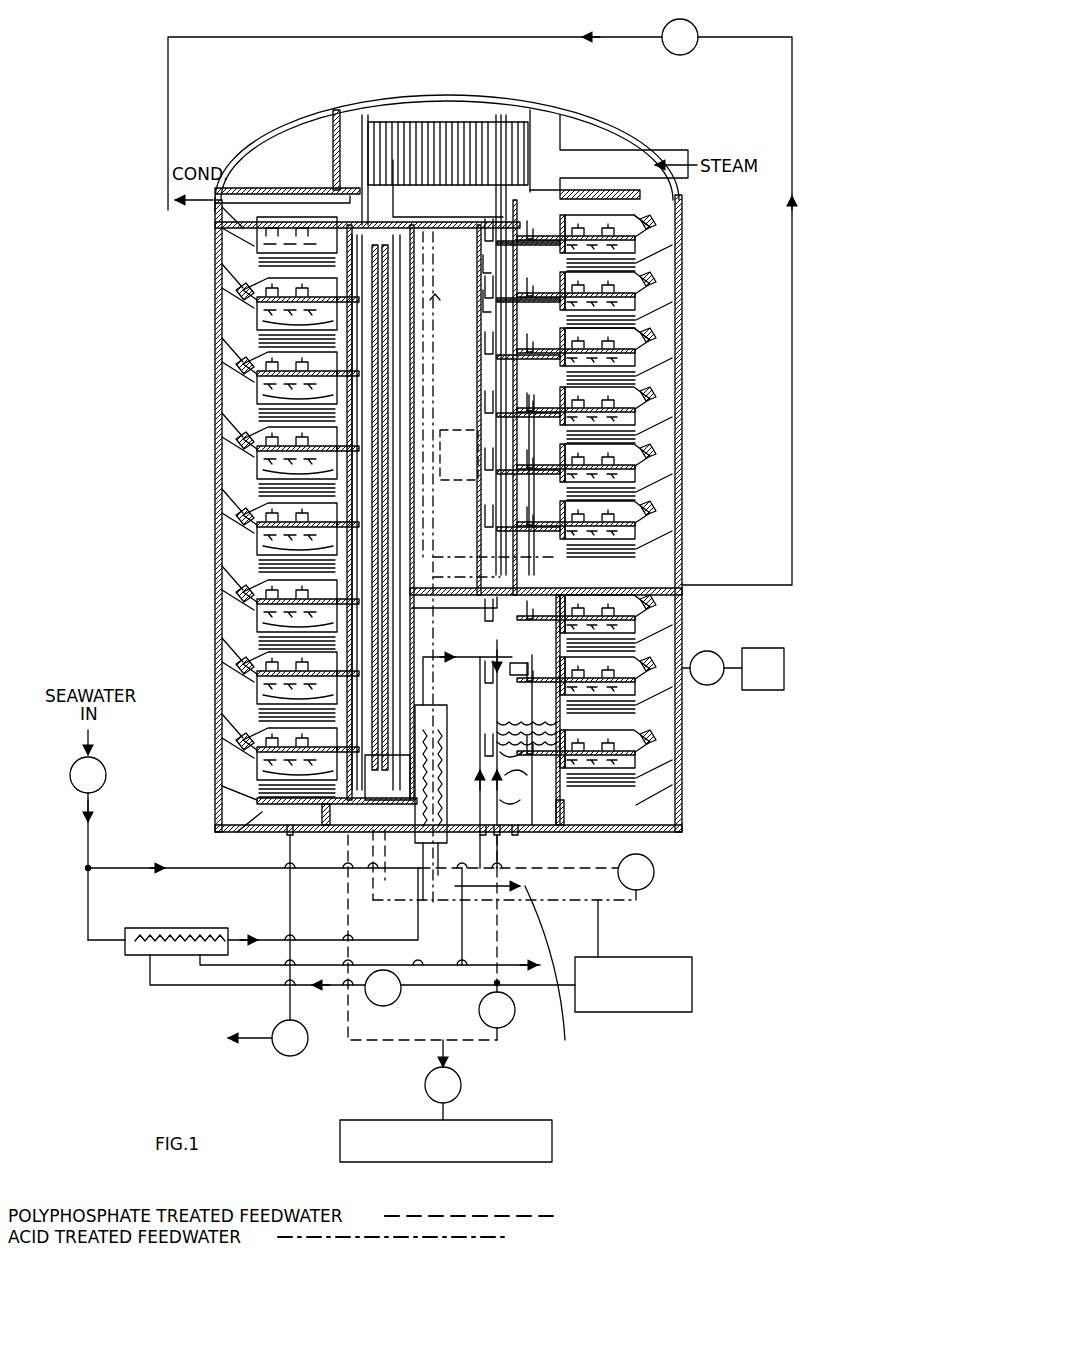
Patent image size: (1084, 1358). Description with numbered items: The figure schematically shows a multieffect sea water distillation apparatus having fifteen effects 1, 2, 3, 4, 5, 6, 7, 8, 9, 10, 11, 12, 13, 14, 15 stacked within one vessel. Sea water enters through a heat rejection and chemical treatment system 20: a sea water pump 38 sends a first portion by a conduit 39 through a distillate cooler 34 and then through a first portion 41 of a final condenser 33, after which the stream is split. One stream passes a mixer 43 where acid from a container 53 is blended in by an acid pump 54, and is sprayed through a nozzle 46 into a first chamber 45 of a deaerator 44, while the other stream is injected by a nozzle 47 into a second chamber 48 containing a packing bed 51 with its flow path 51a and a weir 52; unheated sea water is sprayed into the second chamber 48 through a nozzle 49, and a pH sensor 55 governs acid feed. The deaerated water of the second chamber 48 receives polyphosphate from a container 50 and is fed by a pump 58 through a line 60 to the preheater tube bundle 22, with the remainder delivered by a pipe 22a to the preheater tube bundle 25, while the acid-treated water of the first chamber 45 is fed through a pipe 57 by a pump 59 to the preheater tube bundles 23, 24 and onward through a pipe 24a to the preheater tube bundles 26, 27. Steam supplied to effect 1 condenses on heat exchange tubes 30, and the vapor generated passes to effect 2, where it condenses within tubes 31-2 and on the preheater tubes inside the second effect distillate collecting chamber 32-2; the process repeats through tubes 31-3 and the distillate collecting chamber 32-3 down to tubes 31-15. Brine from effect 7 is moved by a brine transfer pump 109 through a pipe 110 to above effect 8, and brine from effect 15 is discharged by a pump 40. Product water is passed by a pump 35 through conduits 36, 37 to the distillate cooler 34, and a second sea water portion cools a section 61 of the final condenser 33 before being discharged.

The effect 1 is at (563, 108).
The effect 2 is at (652, 220).
The effect 3 is at (655, 296).
The effect 4 is at (652, 356).
The effect 5 is at (655, 407).
The effect 6 is at (652, 462).
The effect 7 is at (655, 524).
The effect 8 is at (238, 240).
The effect 9 is at (238, 305).
The effect 10 is at (238, 383).
The effect 11 is at (238, 455).
The effect 12 is at (238, 529).
The effect 13 is at (238, 606).
The effect 14 is at (238, 680).
The effect 15 is at (238, 760).
The heat rejection and chemical treatment system 20 is at (200, 1018).
The preheater tube bundle 22 is at (325, 830).
The pipe 22a is at (433, 258).
The preheater tube bundle 23 is at (396, 626).
The preheater tube bundle 24 is at (398, 588).
The pipe 24a is at (462, 492).
The preheater tube bundle 25 is at (540, 575).
The preheater tube bundle 26 is at (528, 405).
The preheater tube bundle 27 is at (560, 140).
The heat exchange tubes 30 is at (440, 118).
The tubes 31-2 is at (630, 258).
The tubes 31-3 is at (648, 338).
The tubes 31-15 is at (620, 798).
The second effect distillate collecting chamber 32-2 is at (528, 257).
The distillate collecting chamber 32-3 is at (528, 315).
The final condenser 33 is at (448, 712).
The distillate cooler 34 is at (200, 928).
The pump 35 is at (396, 1003).
The conduit 36 is at (462, 938).
The conduit 37 is at (432, 960).
The sea water pump 38 is at (106, 782).
The conduit 39 is at (90, 900).
The pump 40 is at (303, 1052).
The first portion of final condenser 41 is at (416, 838).
The mixer 43 is at (515, 660).
The deaerator 44 is at (606, 727).
The first chamber 45 is at (540, 724).
The nozzle 46 is at (522, 720).
The nozzle 47 is at (488, 728).
The second chamber 48 is at (468, 668).
The nozzle 49 is at (527, 662).
The container 50 is at (548, 1120).
The packing bed 51 is at (555, 758).
The flow path 51a is at (527, 778).
The weir 52 is at (566, 810).
The container 53 is at (785, 665).
The acid pump 54 is at (717, 652).
The pH sensor 55 is at (693, 990).
The pipe 57 is at (590, 868).
The pump 58 is at (511, 1023).
The pump 59 is at (655, 862).
The line 60 is at (500, 835).
The section of final condenser 61 is at (545, 887).
The brine transfer pump 109 is at (692, 24).
The pipe 110 is at (794, 89).